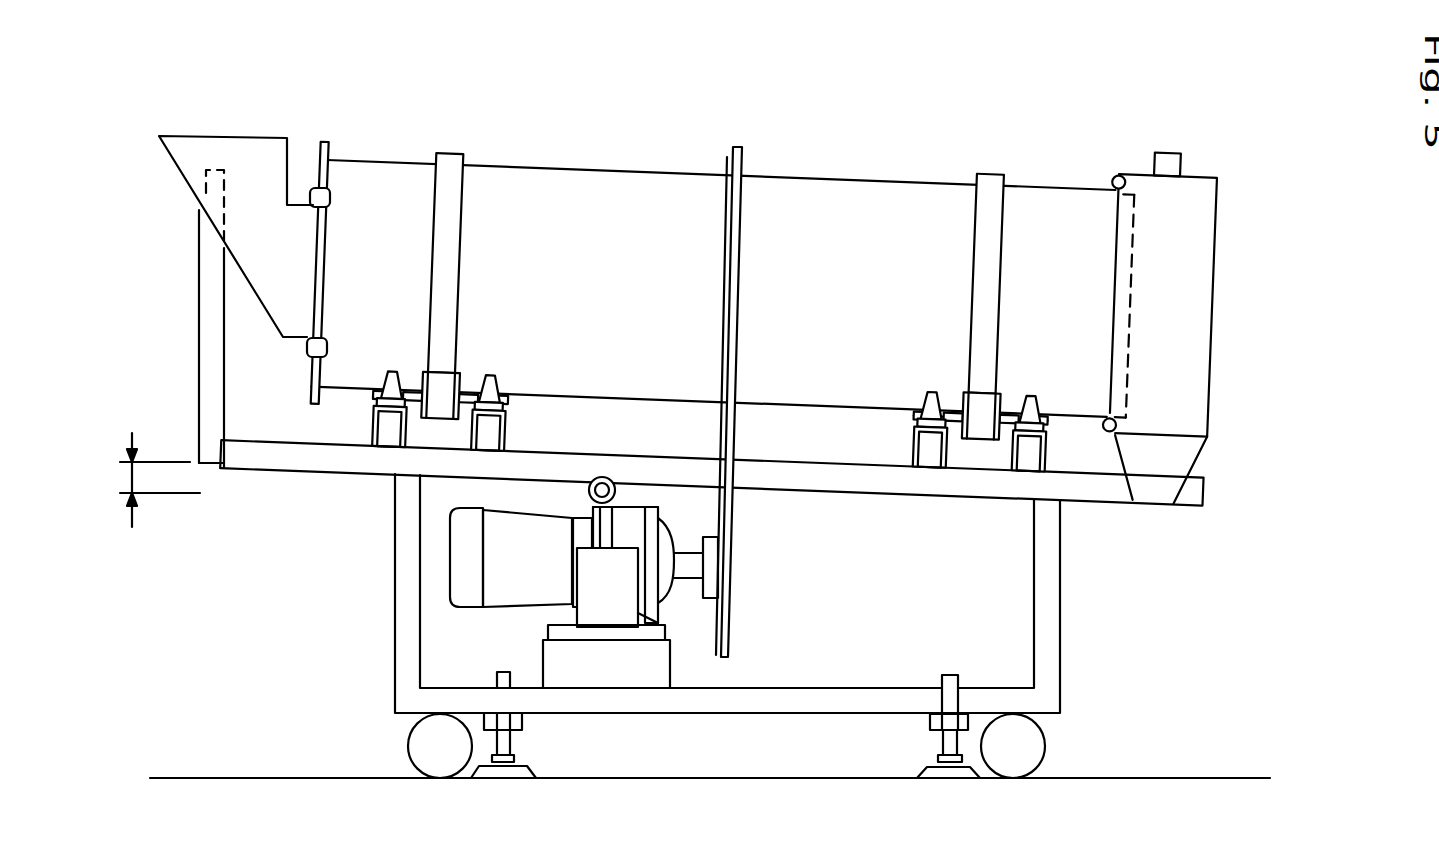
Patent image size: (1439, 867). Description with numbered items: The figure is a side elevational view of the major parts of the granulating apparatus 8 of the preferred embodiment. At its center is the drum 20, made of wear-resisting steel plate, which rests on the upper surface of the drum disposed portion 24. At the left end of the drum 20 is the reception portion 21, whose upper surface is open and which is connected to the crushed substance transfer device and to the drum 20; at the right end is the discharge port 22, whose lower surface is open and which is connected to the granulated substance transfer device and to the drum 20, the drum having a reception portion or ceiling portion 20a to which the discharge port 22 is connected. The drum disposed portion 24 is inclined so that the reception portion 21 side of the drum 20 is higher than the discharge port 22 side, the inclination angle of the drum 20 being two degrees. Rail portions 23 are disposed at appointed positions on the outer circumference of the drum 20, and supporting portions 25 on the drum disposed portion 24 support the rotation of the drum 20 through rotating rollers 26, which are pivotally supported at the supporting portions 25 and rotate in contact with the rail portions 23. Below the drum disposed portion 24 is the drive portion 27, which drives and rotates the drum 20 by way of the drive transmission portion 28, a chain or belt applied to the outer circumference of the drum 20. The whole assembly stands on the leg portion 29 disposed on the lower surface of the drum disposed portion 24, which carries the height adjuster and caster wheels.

The granulating apparatus 8 is at (1147, 86).
The drum 20 is at (595, 222).
The reception portion or ceiling portion 20a is at (325, 192).
The reception portion 21 is at (208, 155).
The discharge port 22 is at (1172, 503).
The rail portion 23 is at (445, 178).
The drum disposed portion 24 is at (263, 457).
The supporting portion 25 is at (487, 433).
The rotating roller 26 is at (433, 390).
The drive portion 27 is at (513, 565).
The drive transmission portion 28 is at (742, 162).
The leg portion 29 is at (1043, 648).